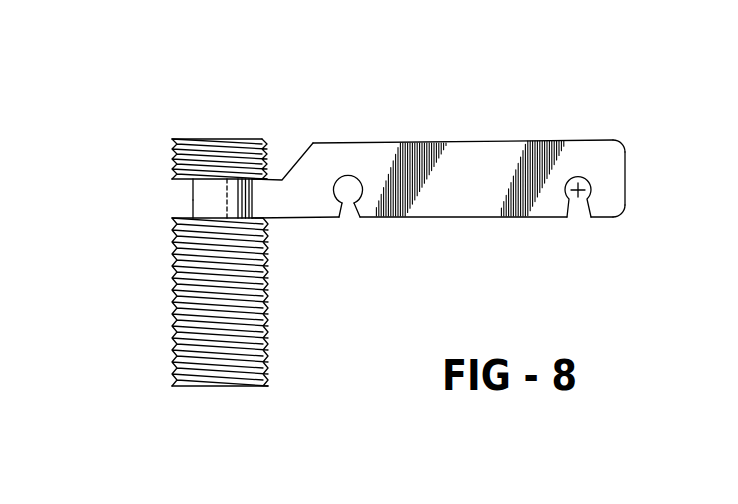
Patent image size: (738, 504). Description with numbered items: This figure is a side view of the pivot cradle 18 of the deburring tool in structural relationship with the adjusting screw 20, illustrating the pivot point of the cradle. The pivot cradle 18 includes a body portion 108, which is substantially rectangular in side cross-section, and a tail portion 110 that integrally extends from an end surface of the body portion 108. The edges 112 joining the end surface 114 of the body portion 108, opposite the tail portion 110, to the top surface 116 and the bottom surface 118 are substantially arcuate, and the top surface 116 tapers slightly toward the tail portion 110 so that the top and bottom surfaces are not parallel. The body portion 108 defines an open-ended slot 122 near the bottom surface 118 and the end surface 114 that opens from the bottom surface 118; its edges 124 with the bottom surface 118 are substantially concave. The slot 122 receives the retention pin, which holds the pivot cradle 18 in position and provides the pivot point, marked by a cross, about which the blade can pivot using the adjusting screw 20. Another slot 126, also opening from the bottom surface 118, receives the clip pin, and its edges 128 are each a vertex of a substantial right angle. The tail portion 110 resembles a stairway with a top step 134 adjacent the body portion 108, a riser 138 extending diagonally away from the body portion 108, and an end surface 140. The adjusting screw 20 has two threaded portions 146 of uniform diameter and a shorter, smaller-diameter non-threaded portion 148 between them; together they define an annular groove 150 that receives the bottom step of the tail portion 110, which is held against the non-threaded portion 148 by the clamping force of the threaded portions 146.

The pivot cradle 18 is at (448, 128).
The adjusting screw 20 is at (203, 126).
The body portion 108 is at (519, 145).
The tail portion 110 is at (266, 206).
The edges 112 is at (623, 138).
The end surface 114 is at (627, 192).
The top surface 116 is at (490, 141).
The bottom surface 118 is at (462, 218).
The open-ended slot 122 is at (593, 187).
The edges 124 is at (591, 218).
The slot 126 is at (338, 177).
The edges 128 is at (361, 218).
The top step 134 is at (388, 142).
The riser 138 is at (310, 147).
The end surface 140 is at (252, 198).
The threaded portions 146 is at (172, 147).
The non-threaded portion 148 is at (192, 192).
The annular groove 150 is at (190, 202).